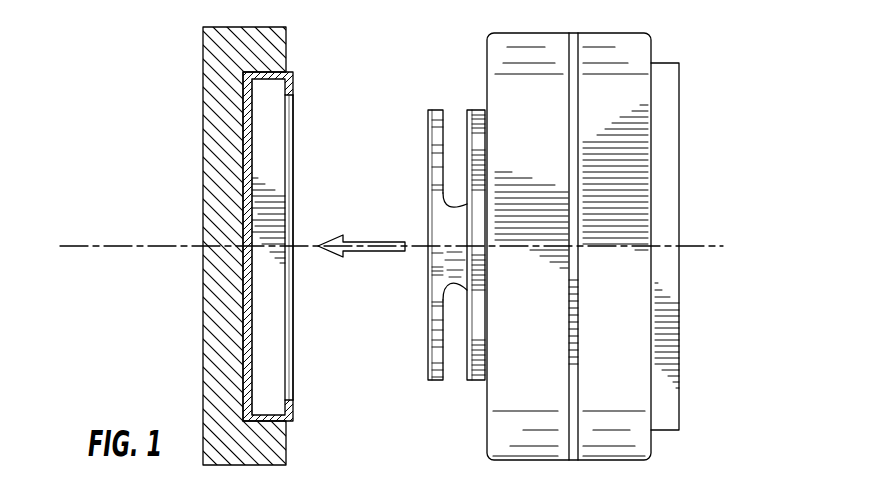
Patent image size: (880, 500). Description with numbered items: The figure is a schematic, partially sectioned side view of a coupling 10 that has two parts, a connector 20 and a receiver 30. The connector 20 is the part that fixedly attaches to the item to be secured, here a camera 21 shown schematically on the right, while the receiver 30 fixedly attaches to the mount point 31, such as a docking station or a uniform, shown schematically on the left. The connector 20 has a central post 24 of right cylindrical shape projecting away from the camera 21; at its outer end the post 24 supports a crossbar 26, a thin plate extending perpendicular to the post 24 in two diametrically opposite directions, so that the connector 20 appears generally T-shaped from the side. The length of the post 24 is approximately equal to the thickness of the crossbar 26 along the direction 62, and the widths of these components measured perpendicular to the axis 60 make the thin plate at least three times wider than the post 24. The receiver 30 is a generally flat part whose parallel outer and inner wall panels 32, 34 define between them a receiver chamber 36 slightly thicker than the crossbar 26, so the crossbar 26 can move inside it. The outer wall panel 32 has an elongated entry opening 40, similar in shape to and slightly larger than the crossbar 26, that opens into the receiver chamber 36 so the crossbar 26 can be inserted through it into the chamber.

The coupling 10 is at (379, 434).
The connector 20 is at (415, 244).
The camera 21 is at (680, 118).
The central post 24 is at (440, 224).
The crossbar 26 is at (434, 382).
The receiver 30 is at (226, 244).
The mount point 31 is at (202, 149).
The outer wall panel 32 is at (290, 414).
The inner wall panel 34 is at (254, 337).
The receiver chamber 36 is at (263, 296).
The entry opening 40 is at (289, 348).
The axis 60 is at (90, 248).
The direction 62 is at (390, 252).